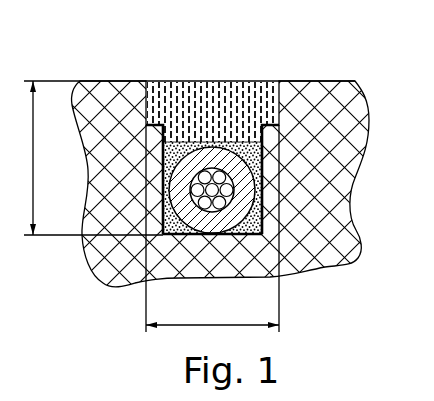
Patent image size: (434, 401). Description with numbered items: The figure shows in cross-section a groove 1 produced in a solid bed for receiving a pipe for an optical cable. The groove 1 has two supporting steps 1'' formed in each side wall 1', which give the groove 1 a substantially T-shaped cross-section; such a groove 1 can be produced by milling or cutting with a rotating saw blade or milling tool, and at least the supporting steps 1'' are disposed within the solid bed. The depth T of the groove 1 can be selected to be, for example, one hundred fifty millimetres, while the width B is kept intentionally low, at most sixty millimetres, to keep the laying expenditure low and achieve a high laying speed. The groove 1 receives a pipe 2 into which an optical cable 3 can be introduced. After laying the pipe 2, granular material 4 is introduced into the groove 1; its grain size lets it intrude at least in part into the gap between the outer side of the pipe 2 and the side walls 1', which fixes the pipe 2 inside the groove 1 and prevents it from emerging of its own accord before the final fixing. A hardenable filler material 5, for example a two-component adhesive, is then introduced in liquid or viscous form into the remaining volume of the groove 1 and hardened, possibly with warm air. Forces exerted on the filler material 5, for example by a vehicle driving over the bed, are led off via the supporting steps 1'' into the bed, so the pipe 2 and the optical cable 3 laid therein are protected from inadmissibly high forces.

The groove 1 is at (220, 200).
The side wall 1' is at (218, 117).
The supporting step 1'' is at (189, 68).
The pipe 2 is at (218, 143).
The optical cable 3 is at (262, 228).
The granular material 4 is at (261, 158).
The filler material 5 is at (186, 122).
The depth of the groove T is at (93, 158).
The width of the groove B is at (212, 228).